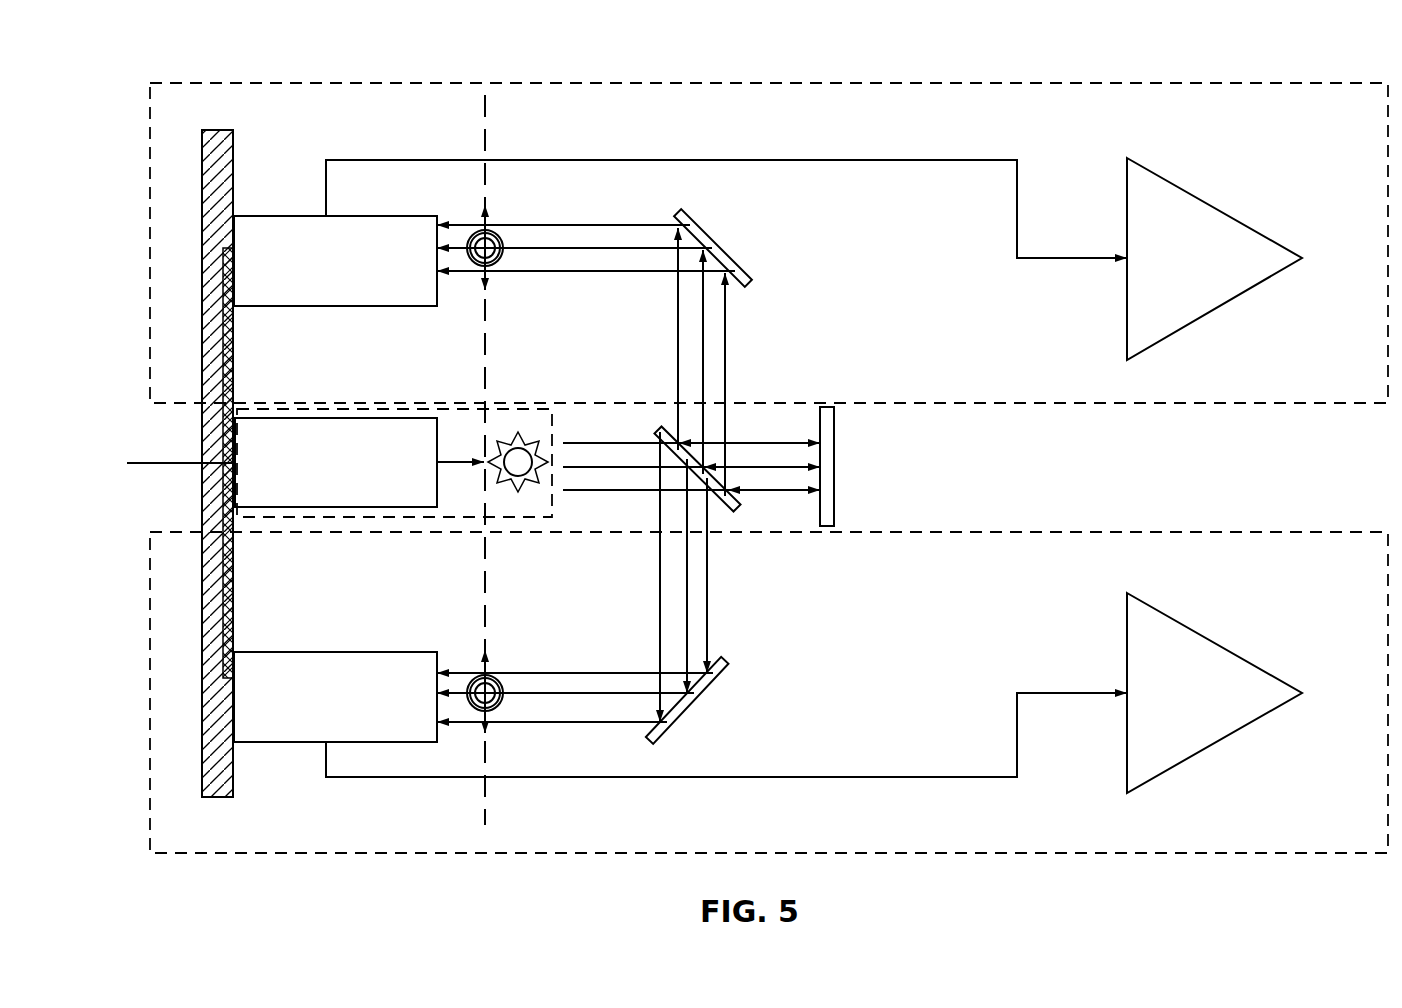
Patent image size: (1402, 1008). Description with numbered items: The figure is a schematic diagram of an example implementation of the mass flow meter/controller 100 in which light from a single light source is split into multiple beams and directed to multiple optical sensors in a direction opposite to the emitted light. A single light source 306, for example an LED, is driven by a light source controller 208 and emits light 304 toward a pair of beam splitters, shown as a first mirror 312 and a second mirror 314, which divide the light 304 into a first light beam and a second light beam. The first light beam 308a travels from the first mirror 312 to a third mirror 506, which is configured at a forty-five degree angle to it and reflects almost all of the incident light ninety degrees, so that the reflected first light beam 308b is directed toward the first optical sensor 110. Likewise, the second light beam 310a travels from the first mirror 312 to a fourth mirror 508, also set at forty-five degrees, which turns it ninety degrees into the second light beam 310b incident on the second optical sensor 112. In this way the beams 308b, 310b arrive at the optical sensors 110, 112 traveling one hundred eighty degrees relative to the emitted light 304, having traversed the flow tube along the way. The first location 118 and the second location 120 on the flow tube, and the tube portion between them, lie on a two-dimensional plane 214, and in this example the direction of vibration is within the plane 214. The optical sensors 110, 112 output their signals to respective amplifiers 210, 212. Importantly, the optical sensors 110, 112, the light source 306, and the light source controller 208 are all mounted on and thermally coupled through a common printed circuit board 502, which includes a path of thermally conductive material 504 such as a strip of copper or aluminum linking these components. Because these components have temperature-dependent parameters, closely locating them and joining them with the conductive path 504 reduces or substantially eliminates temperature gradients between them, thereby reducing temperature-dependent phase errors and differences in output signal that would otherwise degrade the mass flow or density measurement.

The mass flow meter/controller 100 is at (198, 45).
The first optical sensor 110 is at (287, 652).
The second optical sensor 112 is at (305, 216).
The first location 118 is at (493, 680).
The second location 120 is at (470, 242).
The light source controller 208 is at (235, 450).
The first amplifier 210 is at (1213, 643).
The second amplifier 212 is at (1213, 208).
The two-dimensional plane 214 is at (482, 128).
The light 304 is at (590, 441).
The light source 306 is at (510, 445).
The first light beam 308a is at (660, 603).
The first light beam 308b is at (540, 727).
The second light beam 310a is at (677, 312).
The second light beam 310b is at (572, 225).
The first mirror 312 is at (665, 440).
The second mirror 314 is at (835, 455).
The printed circuit board 502 is at (212, 522).
The path of thermally conductive material 504 is at (226, 297).
The third mirror 506 is at (693, 704).
The fourth mirror 508 is at (713, 242).